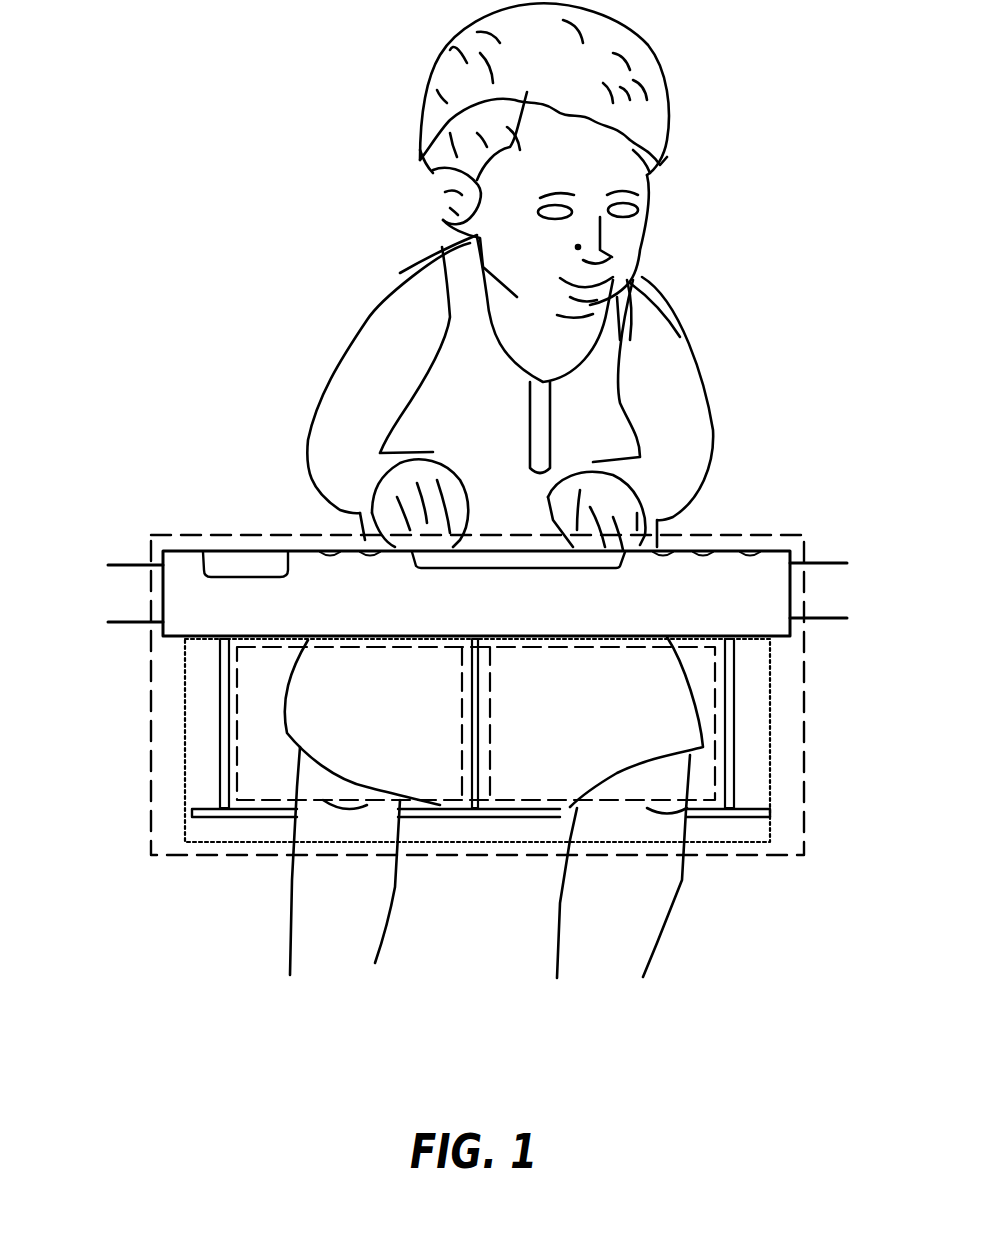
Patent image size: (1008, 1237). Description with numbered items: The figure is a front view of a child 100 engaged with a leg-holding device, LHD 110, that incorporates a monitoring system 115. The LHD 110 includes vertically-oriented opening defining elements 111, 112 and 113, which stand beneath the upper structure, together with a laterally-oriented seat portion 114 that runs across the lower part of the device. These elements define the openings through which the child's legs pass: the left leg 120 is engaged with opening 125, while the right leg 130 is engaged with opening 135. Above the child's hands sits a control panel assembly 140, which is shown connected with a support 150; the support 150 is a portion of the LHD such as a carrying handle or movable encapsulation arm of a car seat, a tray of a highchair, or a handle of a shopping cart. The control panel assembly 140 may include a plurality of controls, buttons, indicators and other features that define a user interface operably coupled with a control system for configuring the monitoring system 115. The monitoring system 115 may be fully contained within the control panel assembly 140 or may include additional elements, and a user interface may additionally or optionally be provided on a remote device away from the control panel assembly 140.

The child 100 is at (365, 320).
The LHD 110 is at (183, 728).
The vertically-oriented opening defining element 111 is at (227, 797).
The vertically-oriented opening defining element 112 is at (478, 805).
The vertically-oriented opening defining element 113 is at (730, 795).
The laterally-oriented seat portion 114 is at (435, 815).
The monitoring system 115 is at (151, 668).
The left leg 120 is at (653, 943).
The opening 125 is at (716, 750).
The right leg 130 is at (288, 935).
The opening 135 is at (237, 742).
The control panel assembly 140 is at (175, 550).
The support 150 is at (824, 564).